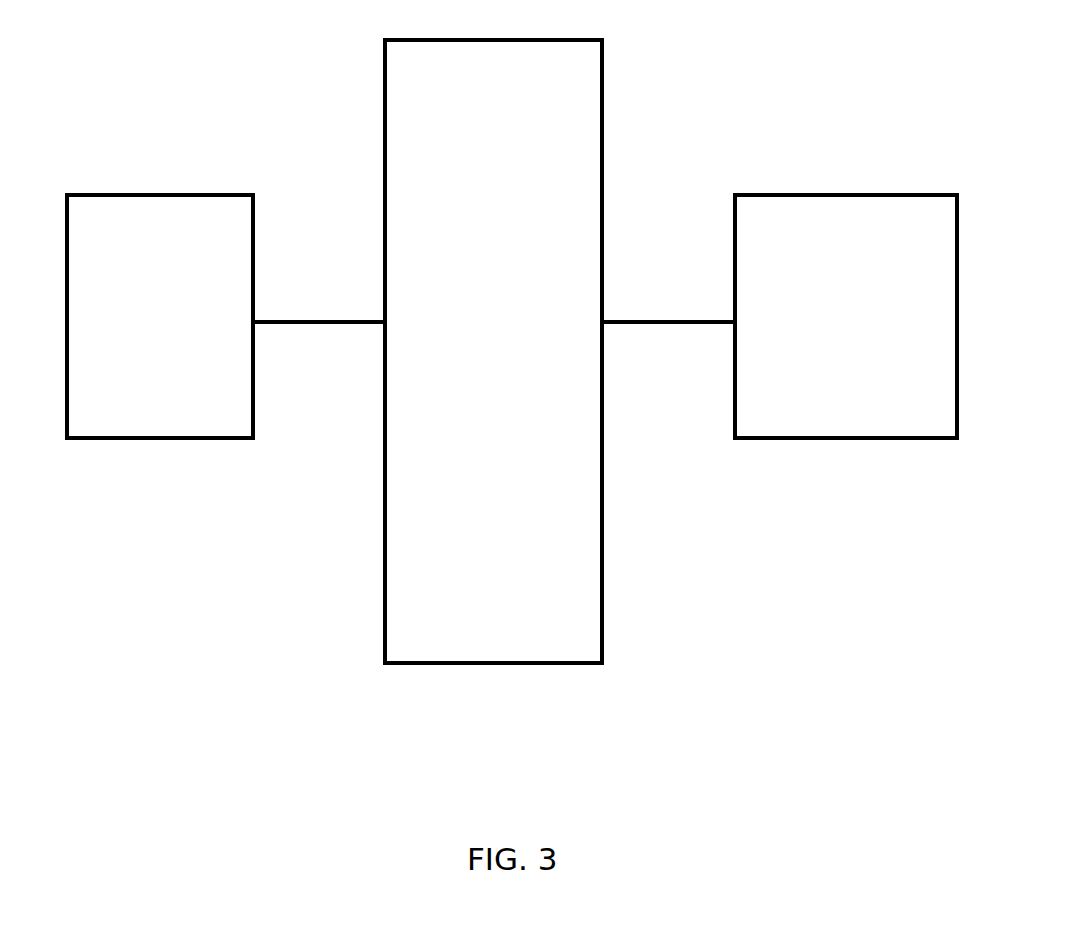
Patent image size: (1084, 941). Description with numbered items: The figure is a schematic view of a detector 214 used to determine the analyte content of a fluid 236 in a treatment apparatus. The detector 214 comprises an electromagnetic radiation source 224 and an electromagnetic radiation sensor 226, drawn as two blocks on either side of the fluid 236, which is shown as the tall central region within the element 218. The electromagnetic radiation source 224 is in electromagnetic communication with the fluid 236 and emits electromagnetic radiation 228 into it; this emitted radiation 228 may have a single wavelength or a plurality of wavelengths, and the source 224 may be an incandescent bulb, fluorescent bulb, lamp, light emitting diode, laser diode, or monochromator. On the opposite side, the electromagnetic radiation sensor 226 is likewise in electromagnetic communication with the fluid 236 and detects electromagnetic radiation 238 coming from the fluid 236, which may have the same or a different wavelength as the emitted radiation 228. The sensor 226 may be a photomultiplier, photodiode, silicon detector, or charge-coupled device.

The detector 214 is at (160, 193).
The central body 218 is at (383, 92).
The electromagnetic radiation source 224 is at (158, 442).
The electromagnetic radiation sensor 226 is at (847, 442).
The electromagnetic radiation 228 is at (348, 324).
The fluid 236 is at (493, 193).
The electromagnetic radiation 238 is at (628, 324).